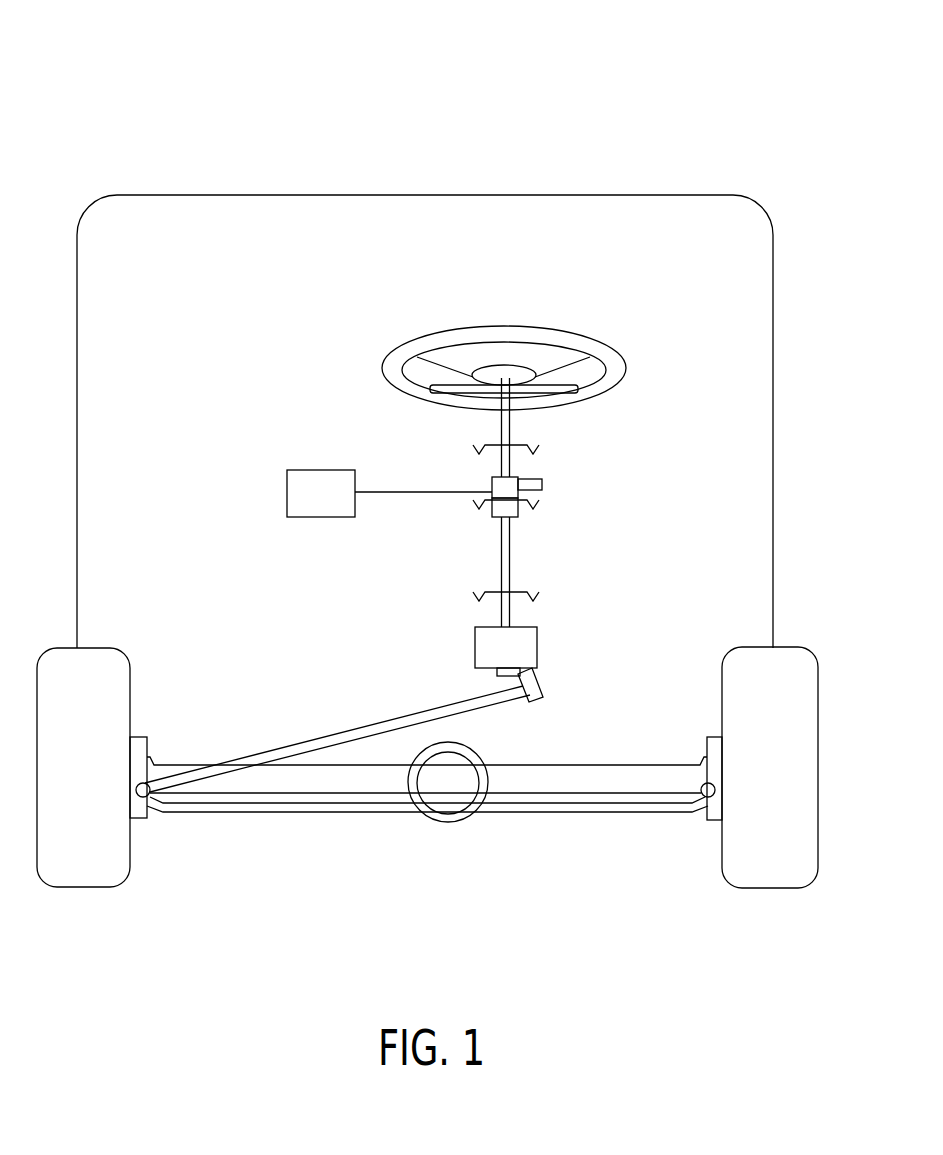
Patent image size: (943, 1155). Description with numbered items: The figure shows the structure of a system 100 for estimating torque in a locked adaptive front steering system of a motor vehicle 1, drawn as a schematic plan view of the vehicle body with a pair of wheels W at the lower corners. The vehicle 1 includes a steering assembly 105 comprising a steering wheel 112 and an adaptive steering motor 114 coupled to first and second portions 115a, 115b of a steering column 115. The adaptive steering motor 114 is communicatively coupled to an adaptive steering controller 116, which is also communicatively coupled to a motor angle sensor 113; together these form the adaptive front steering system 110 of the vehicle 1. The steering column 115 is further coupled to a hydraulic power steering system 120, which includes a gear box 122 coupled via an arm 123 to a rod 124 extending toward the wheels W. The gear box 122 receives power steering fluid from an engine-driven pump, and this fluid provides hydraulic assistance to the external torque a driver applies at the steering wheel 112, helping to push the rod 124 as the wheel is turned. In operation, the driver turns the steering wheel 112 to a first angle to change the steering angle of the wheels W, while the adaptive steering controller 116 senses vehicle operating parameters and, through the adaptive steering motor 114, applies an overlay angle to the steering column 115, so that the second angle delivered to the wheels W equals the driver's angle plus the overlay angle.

The system for estimating torque 100 is at (84, 78).
The motor vehicle 1 is at (775, 287).
The wheels W is at (37, 690).
The steering assembly 105 is at (658, 381).
The steering wheel 112 is at (412, 348).
The steering column 115 is at (464, 480).
The first portion of steering column 115a is at (511, 470).
The second portion of steering column 115b is at (512, 556).
The motor angle sensor 113 is at (545, 485).
The adaptive steering motor 114 is at (497, 513).
The adaptive steering controller 116 is at (308, 484).
The adaptive front steering system 110 is at (376, 542).
The hydraulic power steering system 120 is at (355, 659).
The gear box 122 is at (540, 645).
The arm 123 is at (545, 690).
The rod 124 is at (337, 735).